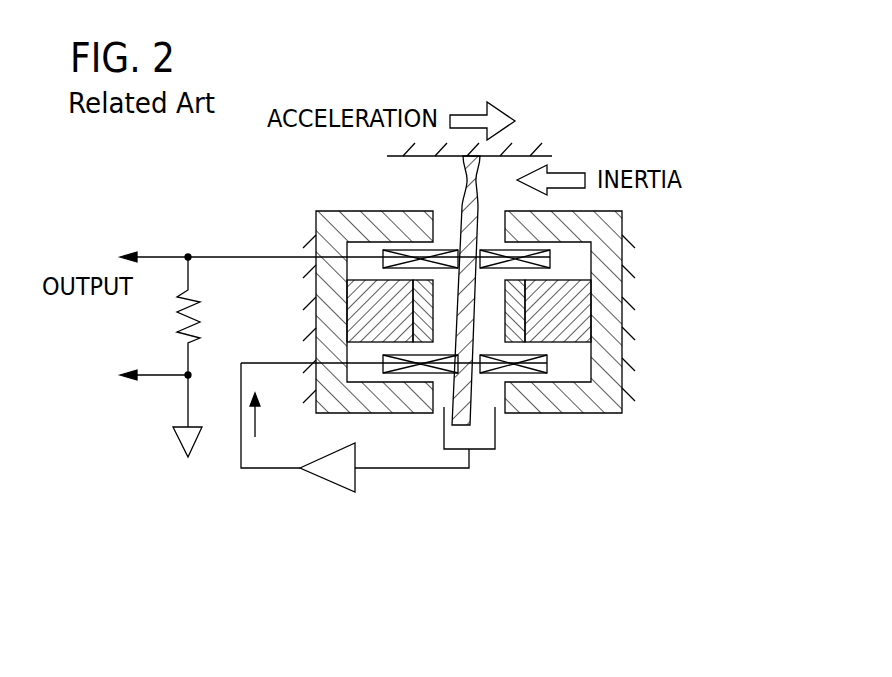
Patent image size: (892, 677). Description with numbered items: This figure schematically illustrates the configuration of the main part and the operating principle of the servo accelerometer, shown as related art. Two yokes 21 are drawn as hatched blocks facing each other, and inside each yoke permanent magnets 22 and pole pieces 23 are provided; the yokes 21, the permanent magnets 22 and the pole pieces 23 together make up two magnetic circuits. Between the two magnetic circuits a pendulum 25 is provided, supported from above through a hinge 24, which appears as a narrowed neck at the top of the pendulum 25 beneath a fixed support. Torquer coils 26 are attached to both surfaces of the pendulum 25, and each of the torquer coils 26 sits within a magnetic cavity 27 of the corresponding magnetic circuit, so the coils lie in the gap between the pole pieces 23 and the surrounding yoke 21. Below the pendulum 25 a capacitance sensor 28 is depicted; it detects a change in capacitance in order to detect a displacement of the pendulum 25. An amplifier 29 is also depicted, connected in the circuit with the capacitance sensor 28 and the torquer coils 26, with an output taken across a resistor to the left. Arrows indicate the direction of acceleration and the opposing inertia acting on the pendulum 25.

The yoke 21 is at (603, 414).
The permanent magnet 22 is at (567, 343).
The pole piece 23 is at (512, 343).
The hinge 24 is at (463, 182).
The pendulum 25 is at (463, 205).
The torquer coil 26 is at (550, 262).
The magnetic cavity 27 is at (523, 247).
The capacitance sensor 28 is at (486, 450).
The amplifier 29 is at (345, 492).